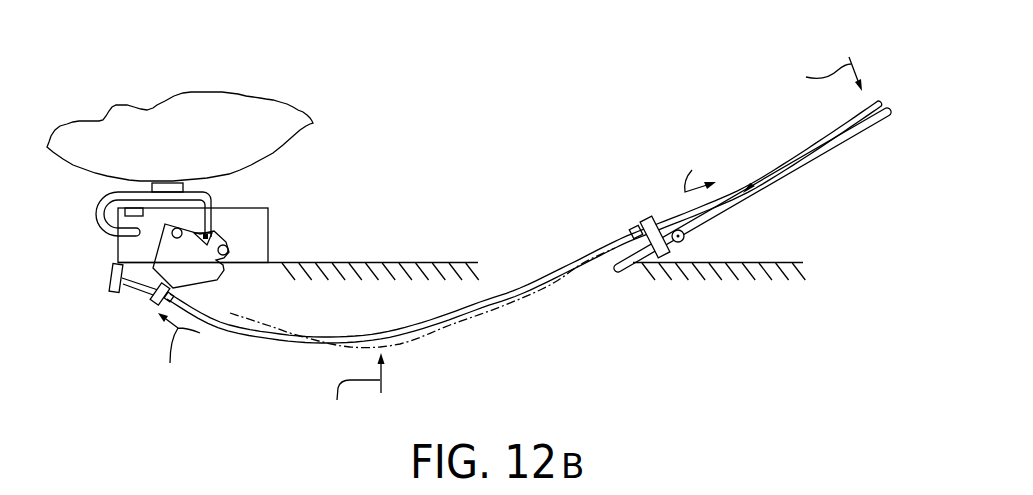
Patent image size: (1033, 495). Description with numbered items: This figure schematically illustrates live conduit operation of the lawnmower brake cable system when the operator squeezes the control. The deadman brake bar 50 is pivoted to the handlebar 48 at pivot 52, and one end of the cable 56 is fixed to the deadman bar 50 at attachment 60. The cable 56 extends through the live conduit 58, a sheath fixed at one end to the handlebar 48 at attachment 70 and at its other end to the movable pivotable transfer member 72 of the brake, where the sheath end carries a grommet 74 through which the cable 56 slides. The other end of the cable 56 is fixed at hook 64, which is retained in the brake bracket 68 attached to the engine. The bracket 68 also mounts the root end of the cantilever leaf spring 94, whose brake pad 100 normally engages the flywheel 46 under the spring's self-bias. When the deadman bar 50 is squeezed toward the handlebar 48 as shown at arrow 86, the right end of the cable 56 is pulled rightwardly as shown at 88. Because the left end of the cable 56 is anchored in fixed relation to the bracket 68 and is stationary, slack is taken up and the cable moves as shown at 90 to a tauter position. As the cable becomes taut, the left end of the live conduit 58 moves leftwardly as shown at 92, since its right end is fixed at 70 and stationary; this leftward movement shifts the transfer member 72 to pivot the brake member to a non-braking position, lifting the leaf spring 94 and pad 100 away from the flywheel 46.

The upper flywheel 46 is at (278, 132).
The handlebar 48 is at (878, 97).
The deadman brake bar 50 is at (888, 115).
The pivot 52 is at (686, 238).
The cable 56 is at (134, 292).
The live conduit 58 is at (580, 261).
The attachment 60 is at (748, 187).
The hook 64 is at (120, 292).
The brake bracket 68 is at (258, 230).
The attachment 70 is at (644, 222).
The transfer member 72 is at (148, 299).
The grommet 74 is at (176, 295).
The arrow 86 is at (817, 74).
The rightward movement 88 is at (697, 170).
The cable movement 90 is at (353, 389).
The leftward movement 92 is at (176, 351).
The cantilever leaf spring 94 is at (112, 192).
The brake pad 100 is at (167, 188).